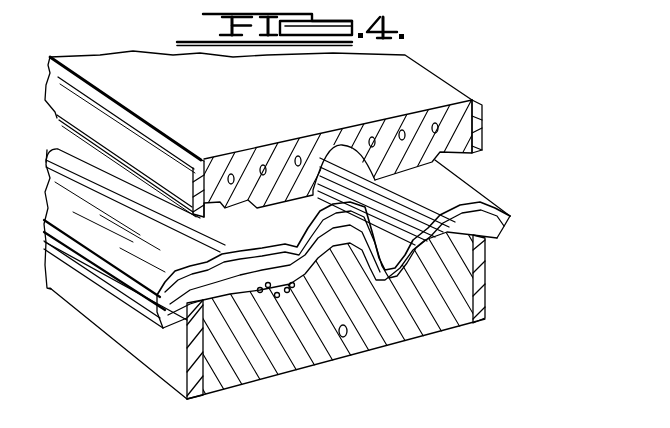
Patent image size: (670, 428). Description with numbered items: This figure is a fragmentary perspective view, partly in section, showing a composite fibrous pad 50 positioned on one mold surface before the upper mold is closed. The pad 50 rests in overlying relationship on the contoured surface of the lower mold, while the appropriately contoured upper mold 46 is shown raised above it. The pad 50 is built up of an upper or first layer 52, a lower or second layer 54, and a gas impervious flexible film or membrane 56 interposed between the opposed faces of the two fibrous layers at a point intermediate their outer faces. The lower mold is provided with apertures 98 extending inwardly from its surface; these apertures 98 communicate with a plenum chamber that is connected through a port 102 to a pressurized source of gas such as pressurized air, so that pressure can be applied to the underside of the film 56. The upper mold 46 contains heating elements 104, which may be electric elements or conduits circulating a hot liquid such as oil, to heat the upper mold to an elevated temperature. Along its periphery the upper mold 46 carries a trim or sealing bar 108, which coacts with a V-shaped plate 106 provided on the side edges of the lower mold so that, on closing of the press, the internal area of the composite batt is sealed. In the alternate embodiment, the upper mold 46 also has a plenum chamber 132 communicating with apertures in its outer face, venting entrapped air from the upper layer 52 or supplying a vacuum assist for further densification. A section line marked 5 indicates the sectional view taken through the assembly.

The upper mold 46 is at (455, 84).
The trim or sealing bar 108 is at (90, 117).
The heating elements 104 is at (435, 124).
The section line for FIG. 5 is at (302, 113).
The plenum chamber 132 is at (407, 427).
The V-shaped plate 106 is at (153, 347).
The port 102 is at (345, 340).
The composite fibrous pad 50 is at (125, 255).
The upper or first layer 52 is at (478, 192).
The lower or second layer 54 is at (492, 233).
The gas impervious flexible film or membrane 56 is at (152, 321).
The apertures 98 is at (273, 304).